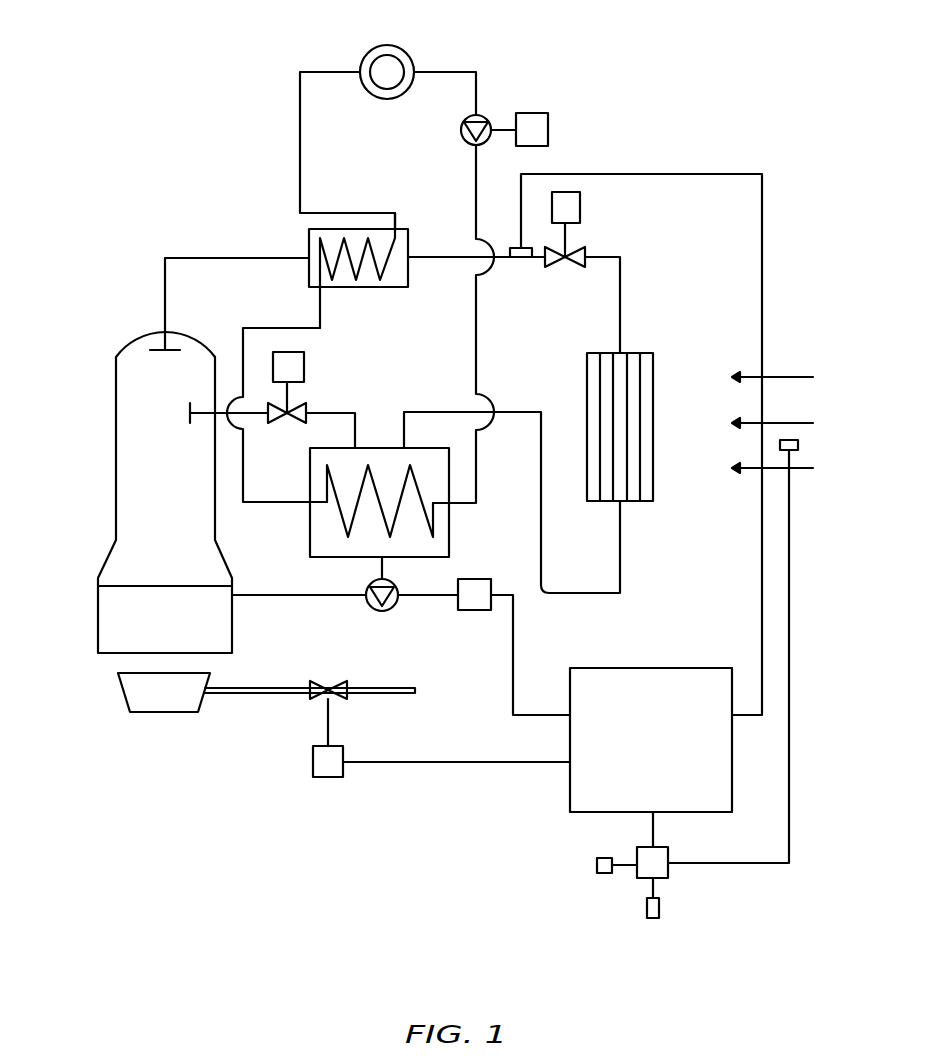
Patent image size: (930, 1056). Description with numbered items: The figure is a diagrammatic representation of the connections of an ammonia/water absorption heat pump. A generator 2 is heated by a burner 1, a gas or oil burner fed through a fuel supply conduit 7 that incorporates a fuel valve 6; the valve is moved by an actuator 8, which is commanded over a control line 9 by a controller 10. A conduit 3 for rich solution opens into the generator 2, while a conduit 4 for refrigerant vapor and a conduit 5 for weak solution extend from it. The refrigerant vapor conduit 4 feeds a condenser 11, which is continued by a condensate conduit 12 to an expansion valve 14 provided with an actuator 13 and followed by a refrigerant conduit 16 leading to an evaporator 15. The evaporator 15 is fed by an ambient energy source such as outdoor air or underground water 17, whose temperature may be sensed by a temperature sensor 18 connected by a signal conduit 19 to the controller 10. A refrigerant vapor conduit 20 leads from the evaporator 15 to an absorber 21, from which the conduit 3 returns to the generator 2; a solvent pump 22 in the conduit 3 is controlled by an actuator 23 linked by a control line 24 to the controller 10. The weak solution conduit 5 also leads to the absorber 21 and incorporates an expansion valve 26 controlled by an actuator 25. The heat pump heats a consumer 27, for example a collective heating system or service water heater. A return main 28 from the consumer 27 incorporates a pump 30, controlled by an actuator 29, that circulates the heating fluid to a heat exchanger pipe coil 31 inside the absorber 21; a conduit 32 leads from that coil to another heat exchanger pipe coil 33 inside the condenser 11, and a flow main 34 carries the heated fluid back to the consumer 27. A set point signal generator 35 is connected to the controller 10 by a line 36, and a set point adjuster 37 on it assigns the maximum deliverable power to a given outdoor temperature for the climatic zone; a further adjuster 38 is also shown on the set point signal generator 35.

The burner 1 is at (152, 712).
The generator 2 is at (116, 436).
The conduit for rich solution 3 is at (380, 570).
The conduit for refrigerant vapor 4 is at (186, 258).
The conduit for weak solution 5 is at (236, 412).
The fuel valve 6 is at (328, 681).
The fuel supply conduit 7 is at (250, 690).
The actuator 8 is at (328, 777).
The control line 9 is at (450, 762).
The controller 10 is at (705, 800).
The condenser 11 is at (328, 282).
The condensate conduit 12 is at (412, 257).
The actuator 13 is at (580, 208).
The expansion valve 14 is at (578, 252).
The evaporator 15 is at (653, 366).
The refrigerant conduit 16 is at (620, 292).
The ambient energy source 17 is at (775, 397).
The temperature sensor 18 is at (798, 445).
The signal conduit 19 is at (790, 530).
The refrigerant vapor conduit 20 is at (562, 596).
The absorber 21 is at (440, 518).
The solvent pump 22 is at (396, 606).
The actuator 23 is at (462, 610).
The control line 24 is at (513, 664).
The actuator 25 is at (304, 368).
The expansion valve 26 is at (300, 408).
The consumer 27 is at (395, 50).
The return main 28 is at (430, 72).
The actuator 29 is at (522, 113).
The pump 30 is at (462, 140).
The heat exchanger pipe coil 31 is at (342, 522).
The conduit 32 is at (245, 444).
The heat exchanger pipe coil 33 is at (380, 270).
The flow main 34 is at (300, 108).
The set point signal generator 35 is at (662, 868).
The line 36 is at (653, 828).
The set point adjuster 37 is at (597, 865).
The sensor 38 is at (655, 917).